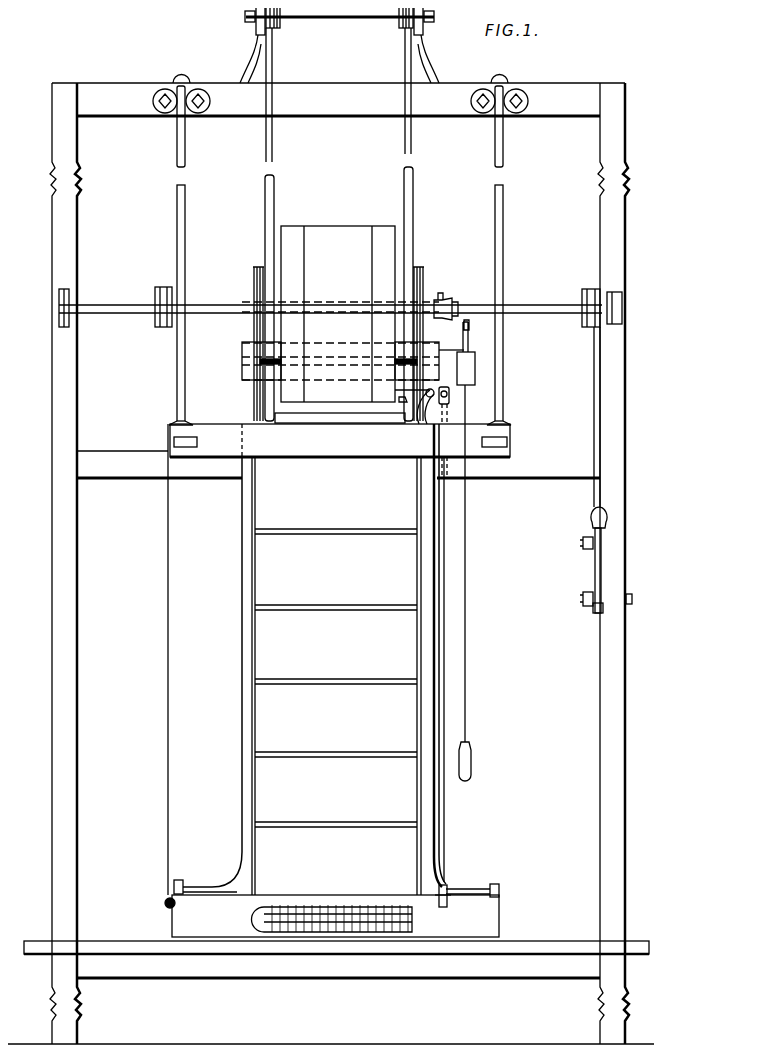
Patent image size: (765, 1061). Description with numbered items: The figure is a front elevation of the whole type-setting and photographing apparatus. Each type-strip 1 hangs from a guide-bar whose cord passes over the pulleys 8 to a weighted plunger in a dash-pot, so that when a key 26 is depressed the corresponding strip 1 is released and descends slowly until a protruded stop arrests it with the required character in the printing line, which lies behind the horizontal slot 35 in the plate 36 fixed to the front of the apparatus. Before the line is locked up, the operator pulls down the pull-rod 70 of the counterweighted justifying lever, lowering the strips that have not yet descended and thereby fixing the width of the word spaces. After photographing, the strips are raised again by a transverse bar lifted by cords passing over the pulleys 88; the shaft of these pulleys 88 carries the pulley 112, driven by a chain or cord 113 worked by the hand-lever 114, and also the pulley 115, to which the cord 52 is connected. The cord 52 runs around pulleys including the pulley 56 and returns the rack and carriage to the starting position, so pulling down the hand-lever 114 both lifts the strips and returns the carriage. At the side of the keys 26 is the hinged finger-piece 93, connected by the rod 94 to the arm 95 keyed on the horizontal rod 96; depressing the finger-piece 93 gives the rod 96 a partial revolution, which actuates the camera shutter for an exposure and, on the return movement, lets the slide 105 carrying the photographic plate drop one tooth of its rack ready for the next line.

The strip 1 is at (272, 185).
The pulleys 8 is at (279, 22).
The key 26 is at (334, 905).
The horizontal slot 35 is at (258, 362).
The plate 36 is at (240, 351).
The cord 52 is at (166, 591).
The pulley 56 is at (163, 903).
The pull-rod 70 is at (463, 572).
The pulleys 88 is at (252, 278).
The hinged finger-piece 93 is at (446, 910).
The rod 94 is at (444, 805).
The arm 95 is at (447, 400).
The horizontal rod 96 is at (340, 451).
The slide 105 is at (340, 324).
The pulley 112 is at (582, 298).
The chain or cord 113 is at (592, 372).
The hand-lever 114 is at (592, 570).
The pulley 115 is at (153, 296).